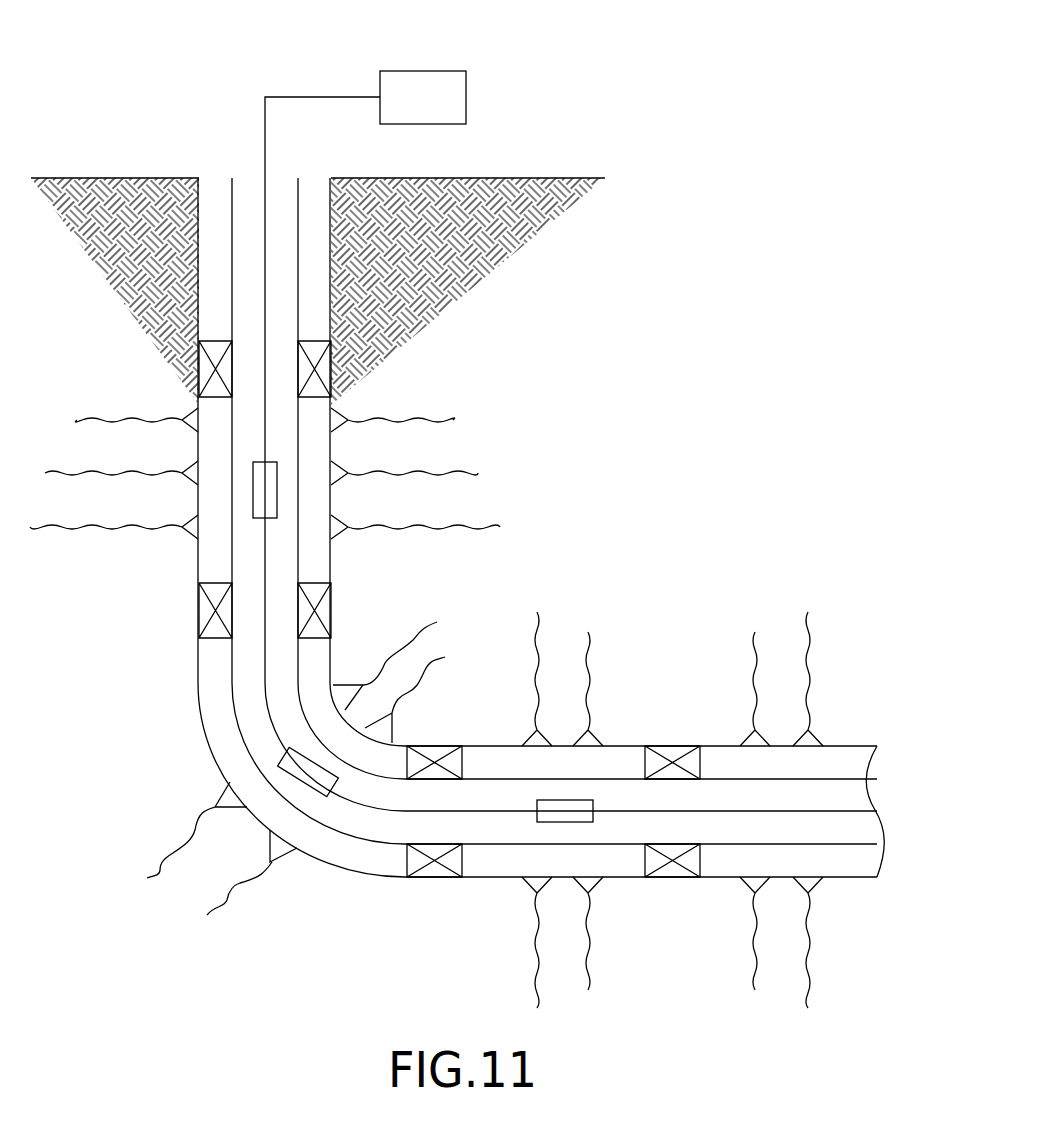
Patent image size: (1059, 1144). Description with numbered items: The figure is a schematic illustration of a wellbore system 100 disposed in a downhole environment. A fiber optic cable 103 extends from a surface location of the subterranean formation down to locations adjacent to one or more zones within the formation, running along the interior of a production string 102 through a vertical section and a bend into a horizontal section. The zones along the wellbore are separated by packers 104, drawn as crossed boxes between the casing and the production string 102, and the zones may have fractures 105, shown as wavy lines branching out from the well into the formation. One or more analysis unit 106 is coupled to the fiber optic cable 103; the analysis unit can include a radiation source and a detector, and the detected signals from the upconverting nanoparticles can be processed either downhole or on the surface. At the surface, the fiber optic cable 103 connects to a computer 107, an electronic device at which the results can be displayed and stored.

The wellbore system 100 is at (210, 131).
The production string 102 is at (298, 240).
The fiber optic cable 103 is at (265, 272).
The packers 104 is at (322, 370).
The fractures 105 is at (478, 478).
The analysis unit 106 is at (302, 778).
The computer 107 is at (432, 78).